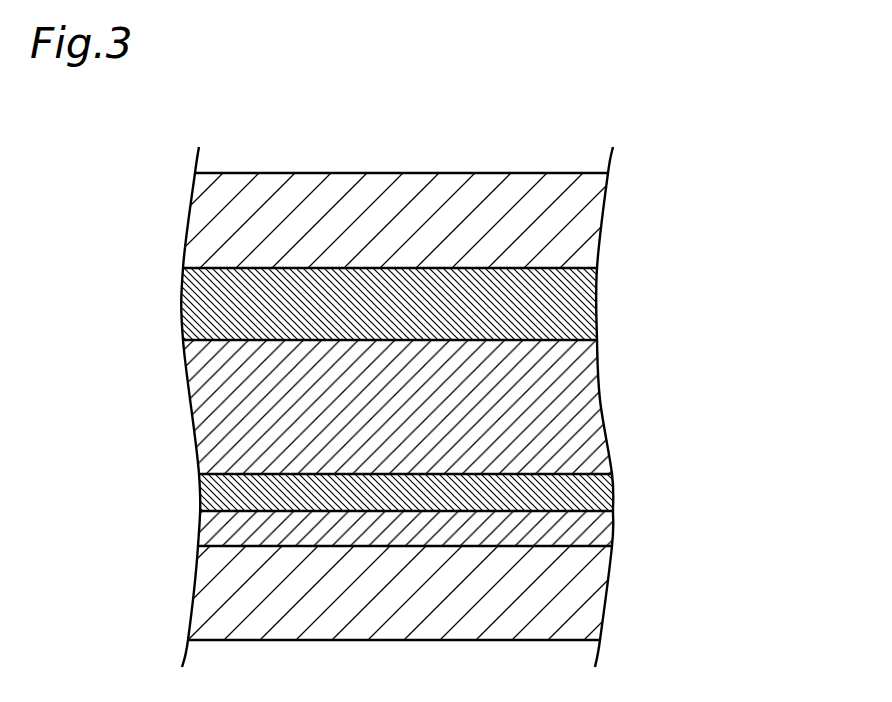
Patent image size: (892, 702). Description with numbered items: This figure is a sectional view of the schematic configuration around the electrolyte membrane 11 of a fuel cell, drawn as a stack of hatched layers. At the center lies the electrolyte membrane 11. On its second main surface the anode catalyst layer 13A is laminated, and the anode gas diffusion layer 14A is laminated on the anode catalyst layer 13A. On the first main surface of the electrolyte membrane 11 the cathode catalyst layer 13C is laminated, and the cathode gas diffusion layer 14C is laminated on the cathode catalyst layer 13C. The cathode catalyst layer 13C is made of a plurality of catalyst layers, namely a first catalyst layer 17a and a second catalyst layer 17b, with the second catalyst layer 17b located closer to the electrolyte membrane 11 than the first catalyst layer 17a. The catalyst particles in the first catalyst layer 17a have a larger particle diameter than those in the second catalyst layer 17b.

The anode gas diffusion layer 14A is at (582, 221).
The anode catalyst layer 13A is at (582, 303).
The electrolyte membrane 11 is at (580, 403).
The second catalyst layer 17b is at (593, 492).
The first catalyst layer 17a is at (595, 527).
The cathode catalyst layer 13C is at (745, 501).
The cathode gas diffusion layer 14C is at (587, 593).